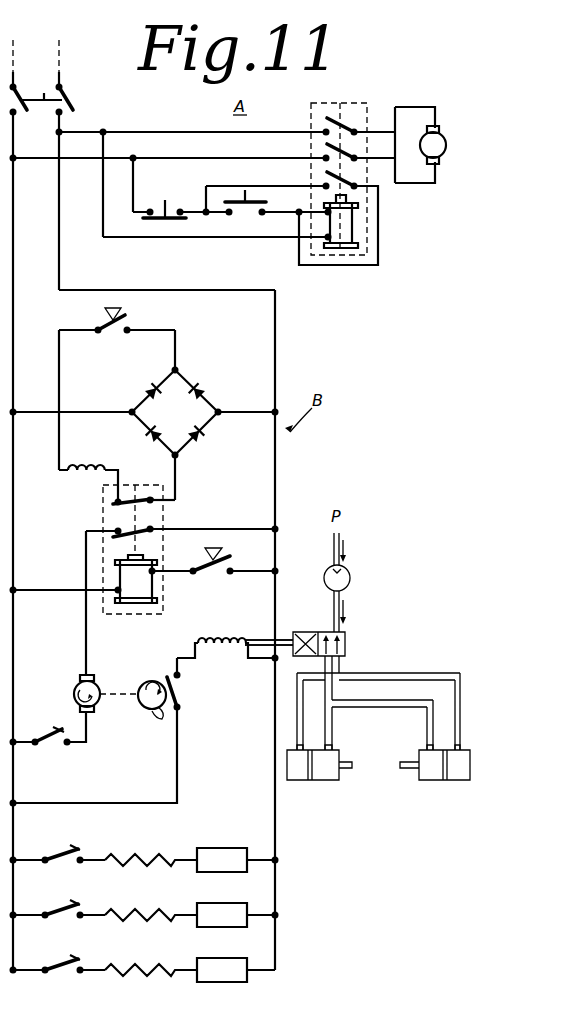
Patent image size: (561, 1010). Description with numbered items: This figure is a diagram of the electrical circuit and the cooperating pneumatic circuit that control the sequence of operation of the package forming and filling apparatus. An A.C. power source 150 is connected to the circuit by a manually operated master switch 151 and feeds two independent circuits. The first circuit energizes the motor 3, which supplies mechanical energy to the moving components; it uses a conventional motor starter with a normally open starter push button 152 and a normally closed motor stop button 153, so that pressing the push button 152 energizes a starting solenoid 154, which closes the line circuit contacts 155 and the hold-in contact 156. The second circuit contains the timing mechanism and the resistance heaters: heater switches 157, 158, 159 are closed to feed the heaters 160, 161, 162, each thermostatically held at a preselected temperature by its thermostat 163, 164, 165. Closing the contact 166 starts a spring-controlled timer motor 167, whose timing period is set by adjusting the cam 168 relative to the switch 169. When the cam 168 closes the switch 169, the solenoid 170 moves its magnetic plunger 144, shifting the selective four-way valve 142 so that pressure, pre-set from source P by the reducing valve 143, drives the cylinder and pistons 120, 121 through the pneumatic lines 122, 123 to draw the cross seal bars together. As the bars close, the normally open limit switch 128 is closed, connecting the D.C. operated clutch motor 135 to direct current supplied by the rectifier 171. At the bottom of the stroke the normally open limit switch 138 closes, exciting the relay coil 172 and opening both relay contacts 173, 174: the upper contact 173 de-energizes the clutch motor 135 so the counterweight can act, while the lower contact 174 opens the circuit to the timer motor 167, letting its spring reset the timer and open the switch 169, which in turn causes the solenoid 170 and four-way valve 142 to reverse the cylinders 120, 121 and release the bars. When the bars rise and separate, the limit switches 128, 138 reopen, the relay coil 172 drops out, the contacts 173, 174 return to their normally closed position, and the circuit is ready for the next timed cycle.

The motor 3 is at (437, 141).
The cylinder and piston 120 is at (302, 782).
The cylinder and piston 121 is at (432, 782).
The hydraulic lines 122 is at (470, 675).
The hydraulic line 123 is at (433, 728).
The limit switch 128 is at (100, 318).
The clutch motor 135 is at (98, 463).
The limit switch 138 is at (216, 546).
The four-way valve 142 is at (300, 632).
The reducing valve 143 is at (350, 572).
The magnetic plunger 144 is at (286, 640).
The A.C. power source 150 is at (58, 66).
The master switch 151 is at (66, 90).
The starter push button 152 is at (255, 205).
The motor stop button 153 is at (168, 208).
The starting solenoid 154 is at (342, 250).
The line circuit contacts 155 is at (326, 118).
The hold-in contact 156 is at (324, 174).
The heater switch 157 is at (68, 850).
The heater switch 158 is at (61, 904).
The heater switch 159 is at (63, 959).
The heater 160 is at (150, 856).
The heater 161 is at (155, 912).
The heater 162 is at (140, 967).
The thermostat 163 is at (228, 852).
The thermostat 164 is at (228, 908).
The thermostat 165 is at (225, 965).
The contact 166 is at (49, 730).
The timer motor 167 is at (74, 684).
The cam 168 is at (150, 681).
The switch 169 is at (181, 691).
The solenoid 170 is at (225, 641).
The rectifier 171 is at (198, 382).
The relay coil 172 is at (138, 579).
The relay contact 173 is at (136, 497).
The relay contact 174 is at (148, 524).